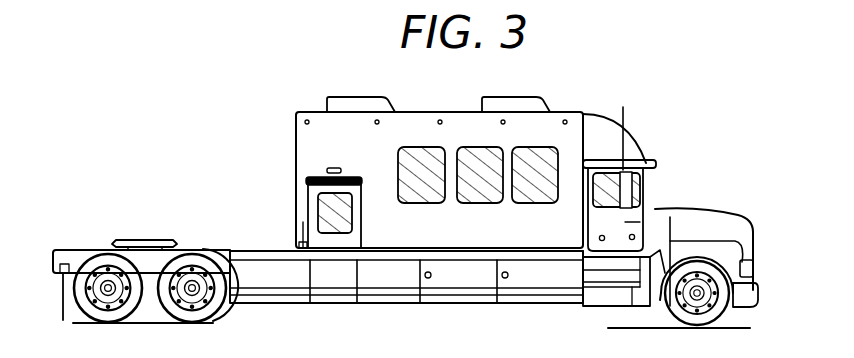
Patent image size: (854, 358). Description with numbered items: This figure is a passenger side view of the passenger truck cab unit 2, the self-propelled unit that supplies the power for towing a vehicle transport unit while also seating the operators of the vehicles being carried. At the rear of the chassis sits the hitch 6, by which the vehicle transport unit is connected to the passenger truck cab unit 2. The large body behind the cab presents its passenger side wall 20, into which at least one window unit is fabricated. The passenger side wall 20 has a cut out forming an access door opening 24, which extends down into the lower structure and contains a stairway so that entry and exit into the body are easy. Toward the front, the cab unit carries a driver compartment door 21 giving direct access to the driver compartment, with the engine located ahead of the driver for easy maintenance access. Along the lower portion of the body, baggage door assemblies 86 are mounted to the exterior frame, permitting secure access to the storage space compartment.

The passenger truck cab unit 2 is at (389, 68).
The hitch 6 is at (150, 241).
The passenger side wall 20 is at (462, 234).
The driver compartment door 21 is at (630, 222).
The access door opening 24 is at (333, 270).
The baggage door assemblies 86 is at (463, 278).